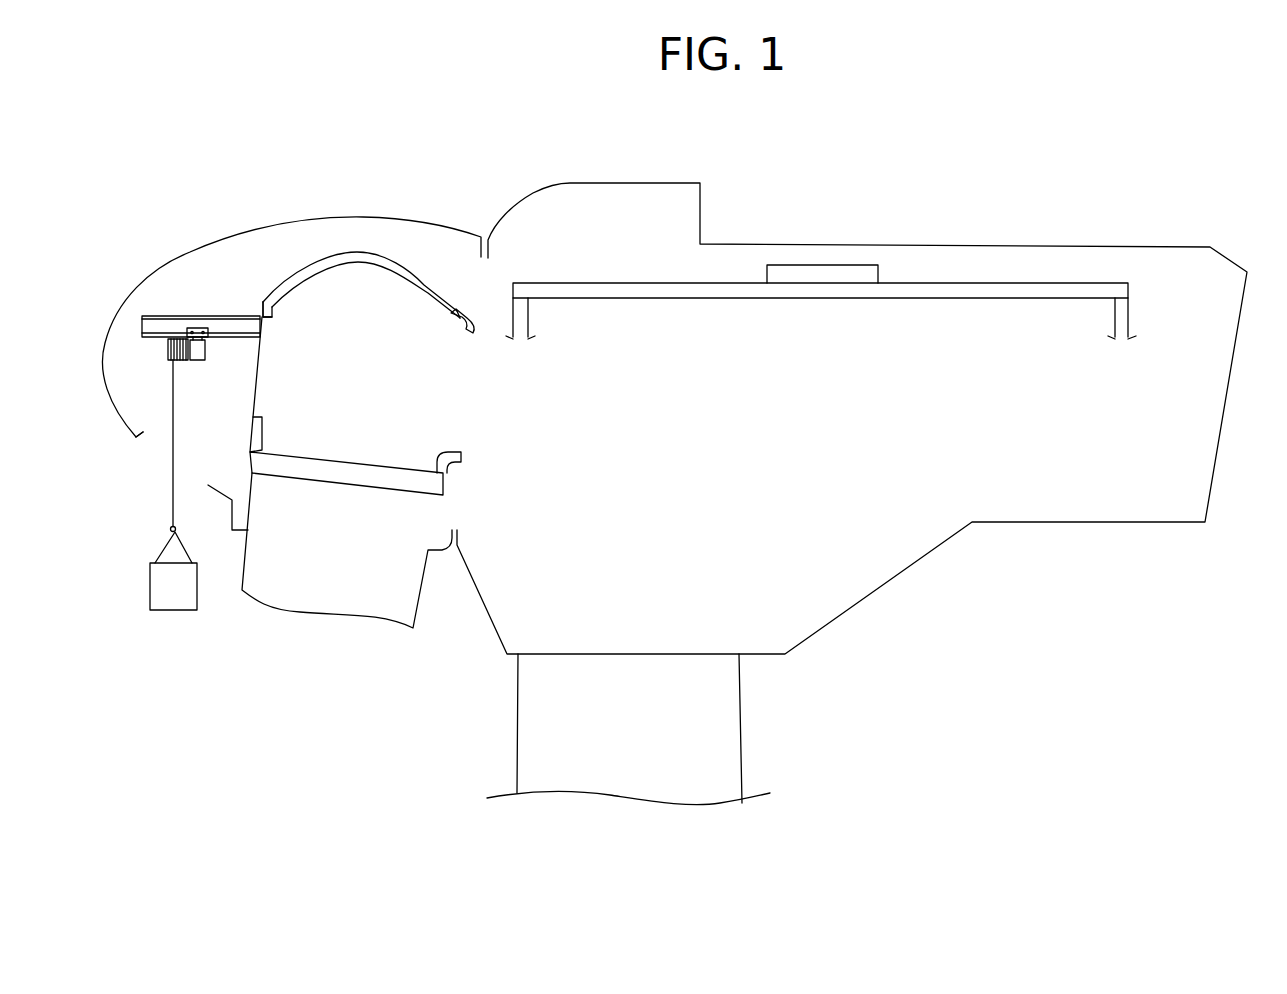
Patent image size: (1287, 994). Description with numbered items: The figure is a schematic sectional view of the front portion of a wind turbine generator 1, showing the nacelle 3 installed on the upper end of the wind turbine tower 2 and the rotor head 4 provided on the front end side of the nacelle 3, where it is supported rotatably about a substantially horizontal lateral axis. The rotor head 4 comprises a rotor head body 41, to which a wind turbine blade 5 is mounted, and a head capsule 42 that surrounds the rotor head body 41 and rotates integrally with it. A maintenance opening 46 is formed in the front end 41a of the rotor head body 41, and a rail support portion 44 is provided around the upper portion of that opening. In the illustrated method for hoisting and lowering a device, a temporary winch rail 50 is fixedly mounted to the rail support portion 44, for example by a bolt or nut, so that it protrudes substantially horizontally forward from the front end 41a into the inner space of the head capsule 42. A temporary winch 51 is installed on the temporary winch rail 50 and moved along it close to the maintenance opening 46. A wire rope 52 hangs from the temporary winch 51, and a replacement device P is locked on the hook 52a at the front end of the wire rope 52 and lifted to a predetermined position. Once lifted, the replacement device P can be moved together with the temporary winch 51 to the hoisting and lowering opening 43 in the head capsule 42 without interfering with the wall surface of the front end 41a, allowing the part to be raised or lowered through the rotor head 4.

The wind turbine generator 1 is at (956, 162).
The wind turbine tower 2 is at (742, 725).
The nacelle 3 is at (1043, 244).
The rotor head 4 is at (337, 198).
The wind turbine blade 5 is at (418, 608).
The rotor head body 41 is at (377, 253).
The front end of the rotor head body 41a is at (250, 435).
The head capsule 42 is at (183, 256).
The hoisting and lowering opening 43 is at (146, 452).
The rail support portion 44 is at (259, 304).
The maintenance opening 46 is at (258, 368).
The temporary winch rail 50 is at (150, 316).
The temporary winch 51 is at (195, 362).
The wire rope 52 is at (172, 482).
The hook 52a is at (170, 529).
The replacement device P is at (170, 612).